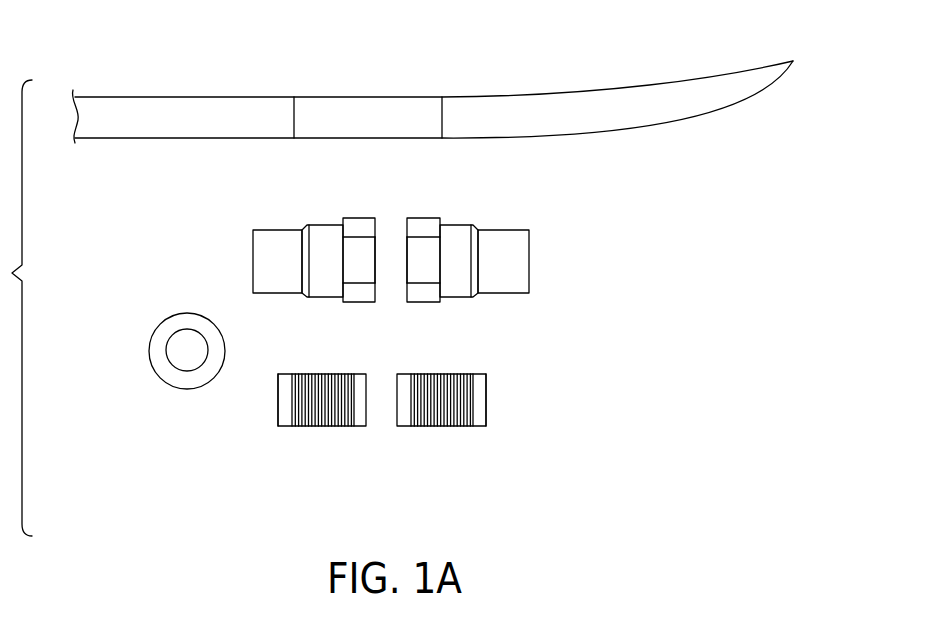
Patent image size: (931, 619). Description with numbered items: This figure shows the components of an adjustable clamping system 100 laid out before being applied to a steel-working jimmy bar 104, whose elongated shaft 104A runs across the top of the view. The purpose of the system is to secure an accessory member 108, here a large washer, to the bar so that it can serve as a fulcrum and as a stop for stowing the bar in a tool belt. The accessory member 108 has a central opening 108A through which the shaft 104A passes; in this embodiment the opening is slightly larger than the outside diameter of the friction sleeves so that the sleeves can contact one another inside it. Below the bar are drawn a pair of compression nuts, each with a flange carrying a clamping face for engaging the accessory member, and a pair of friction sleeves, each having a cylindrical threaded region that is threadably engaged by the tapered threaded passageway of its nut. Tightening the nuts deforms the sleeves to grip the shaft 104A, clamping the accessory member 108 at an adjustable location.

The adjustable clamping system 100 is at (219, 423).
The jimmy bar 104 is at (710, 141).
The shaft 104A is at (205, 96).
The accessory member 108 is at (127, 379).
The central opening 108A is at (170, 345).